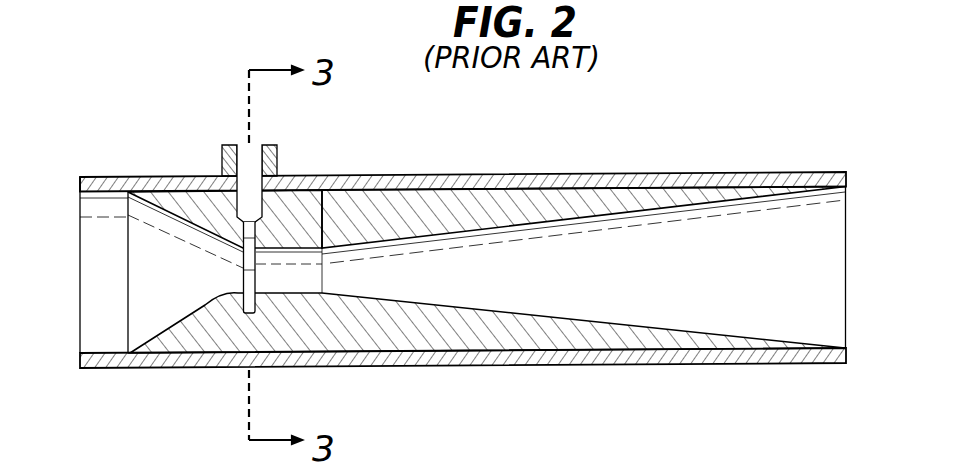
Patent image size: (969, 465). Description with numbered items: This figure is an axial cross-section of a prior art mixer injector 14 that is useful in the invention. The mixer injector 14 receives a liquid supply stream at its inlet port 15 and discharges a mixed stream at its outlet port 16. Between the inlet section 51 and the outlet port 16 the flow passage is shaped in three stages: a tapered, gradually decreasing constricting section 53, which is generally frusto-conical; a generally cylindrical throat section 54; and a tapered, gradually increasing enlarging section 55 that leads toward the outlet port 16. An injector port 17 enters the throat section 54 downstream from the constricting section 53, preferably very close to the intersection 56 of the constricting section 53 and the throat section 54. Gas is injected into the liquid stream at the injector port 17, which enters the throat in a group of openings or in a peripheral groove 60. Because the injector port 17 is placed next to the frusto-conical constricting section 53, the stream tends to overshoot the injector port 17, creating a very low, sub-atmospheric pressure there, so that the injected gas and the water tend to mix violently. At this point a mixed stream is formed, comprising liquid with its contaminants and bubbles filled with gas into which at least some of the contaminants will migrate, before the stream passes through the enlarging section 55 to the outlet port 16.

The mixer injector 14 is at (462, 162).
The inlet port 15 is at (80, 342).
The outlet port 16 is at (846, 333).
The injector port 17 is at (262, 145).
The inlet section 51 is at (88, 194).
The constricting section 53 is at (197, 218).
The throat section 54 is at (289, 246).
The enlarging section 55 is at (636, 212).
The intersection 56 is at (228, 295).
The peripheral groove 60 is at (247, 314).